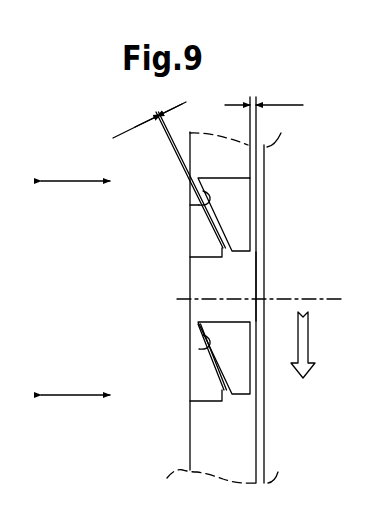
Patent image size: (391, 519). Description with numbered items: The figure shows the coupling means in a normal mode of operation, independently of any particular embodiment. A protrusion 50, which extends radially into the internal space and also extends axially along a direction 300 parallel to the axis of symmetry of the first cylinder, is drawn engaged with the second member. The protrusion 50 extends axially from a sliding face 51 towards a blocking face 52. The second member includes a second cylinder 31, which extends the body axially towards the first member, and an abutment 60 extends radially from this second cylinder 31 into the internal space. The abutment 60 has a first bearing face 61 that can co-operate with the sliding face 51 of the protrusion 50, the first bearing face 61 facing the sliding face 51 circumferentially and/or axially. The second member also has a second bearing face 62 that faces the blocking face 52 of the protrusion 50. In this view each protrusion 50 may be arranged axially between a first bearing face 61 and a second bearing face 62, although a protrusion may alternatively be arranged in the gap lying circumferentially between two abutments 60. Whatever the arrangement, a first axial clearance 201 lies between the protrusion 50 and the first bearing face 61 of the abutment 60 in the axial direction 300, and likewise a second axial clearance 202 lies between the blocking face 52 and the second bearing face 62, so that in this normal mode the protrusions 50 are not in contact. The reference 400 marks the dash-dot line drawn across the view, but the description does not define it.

The second cylinder 31 is at (203, 445).
The protrusion 50 is at (227, 209).
The sliding face 51 is at (200, 197).
The blocking face 52 is at (252, 217).
The abutment 60 is at (203, 242).
The first bearing face 61 is at (205, 226).
The second bearing face 62 is at (255, 295).
The first axial clearance 201 is at (128, 131).
The second axial clearance 202 is at (286, 105).
The axial direction 300 is at (80, 178).
The reference plane 400 is at (192, 295).